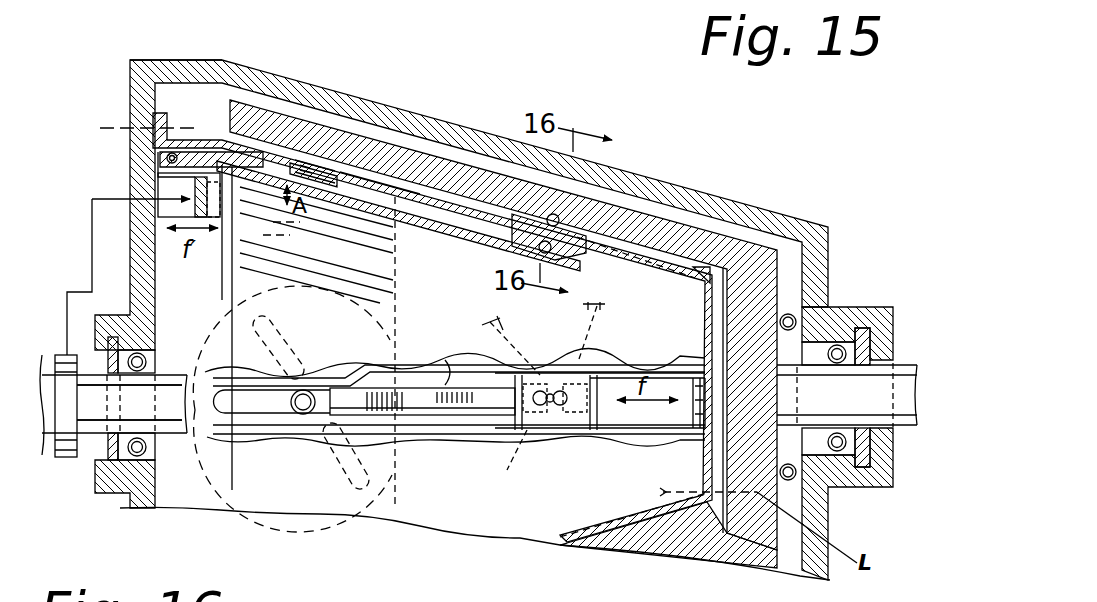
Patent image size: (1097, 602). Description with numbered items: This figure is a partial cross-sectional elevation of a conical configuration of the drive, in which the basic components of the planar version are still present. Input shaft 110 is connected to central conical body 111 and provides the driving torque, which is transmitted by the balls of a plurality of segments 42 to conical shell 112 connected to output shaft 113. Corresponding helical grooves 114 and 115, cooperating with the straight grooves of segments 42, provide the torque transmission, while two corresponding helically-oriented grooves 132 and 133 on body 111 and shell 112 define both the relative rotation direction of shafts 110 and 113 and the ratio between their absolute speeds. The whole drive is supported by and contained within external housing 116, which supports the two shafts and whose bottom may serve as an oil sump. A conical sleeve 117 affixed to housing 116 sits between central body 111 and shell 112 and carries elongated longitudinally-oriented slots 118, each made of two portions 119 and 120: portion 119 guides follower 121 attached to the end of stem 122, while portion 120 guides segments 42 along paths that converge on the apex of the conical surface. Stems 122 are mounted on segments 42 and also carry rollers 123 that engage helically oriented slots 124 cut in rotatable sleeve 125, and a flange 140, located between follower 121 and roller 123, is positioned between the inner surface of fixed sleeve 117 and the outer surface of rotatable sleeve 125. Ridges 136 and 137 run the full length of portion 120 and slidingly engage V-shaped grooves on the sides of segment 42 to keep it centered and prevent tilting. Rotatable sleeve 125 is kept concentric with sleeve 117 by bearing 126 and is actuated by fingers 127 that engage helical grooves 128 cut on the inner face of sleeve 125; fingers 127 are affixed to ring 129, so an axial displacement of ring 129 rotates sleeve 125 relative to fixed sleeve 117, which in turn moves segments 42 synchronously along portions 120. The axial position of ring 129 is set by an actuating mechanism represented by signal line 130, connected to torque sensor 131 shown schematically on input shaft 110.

The input shaft 110 is at (45, 445).
The central conical body 111 is at (215, 495).
The conical shell 112 is at (624, 217).
The output shaft 113 is at (906, 362).
The helical groove 114 is at (436, 228).
The helical groove 115 is at (450, 183).
The external housing 116 is at (768, 207).
The conical sleeve 117 is at (202, 140).
The elongated longitudinally-oriented slots 118 is at (363, 381).
The slot portion 119 is at (250, 435).
The slot portion 120 is at (427, 403).
The follower 121 is at (316, 158).
The stem 122 is at (378, 167).
The roller 123 is at (289, 172).
The slots 124 is at (262, 168).
The rotatable sleeve 125 is at (365, 195).
The bearing 126 is at (168, 157).
The fingers 127 is at (160, 165).
The helical grooves 128 is at (195, 187).
The ring 129 is at (92, 199).
The signal line 130 is at (92, 263).
The torque sensor 131 is at (70, 460).
The helically-oriented groove 132 is at (535, 430).
The helically-oriented groove 133 is at (585, 438).
The ridge 136 is at (450, 380).
The ridge 137 is at (484, 423).
The flange 140 is at (354, 160).
The segments 42 is at (580, 250).